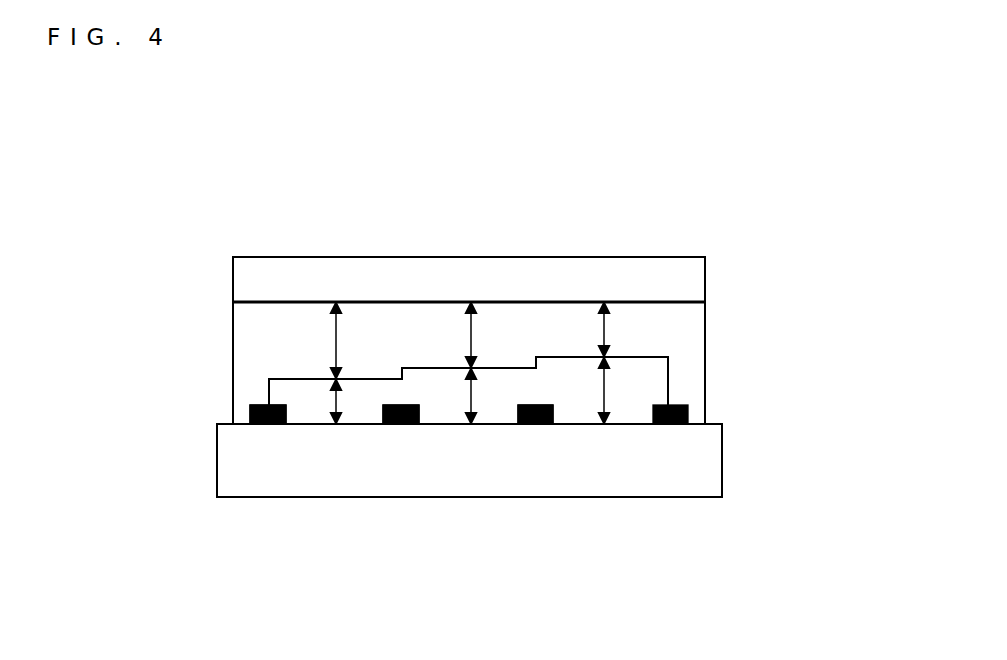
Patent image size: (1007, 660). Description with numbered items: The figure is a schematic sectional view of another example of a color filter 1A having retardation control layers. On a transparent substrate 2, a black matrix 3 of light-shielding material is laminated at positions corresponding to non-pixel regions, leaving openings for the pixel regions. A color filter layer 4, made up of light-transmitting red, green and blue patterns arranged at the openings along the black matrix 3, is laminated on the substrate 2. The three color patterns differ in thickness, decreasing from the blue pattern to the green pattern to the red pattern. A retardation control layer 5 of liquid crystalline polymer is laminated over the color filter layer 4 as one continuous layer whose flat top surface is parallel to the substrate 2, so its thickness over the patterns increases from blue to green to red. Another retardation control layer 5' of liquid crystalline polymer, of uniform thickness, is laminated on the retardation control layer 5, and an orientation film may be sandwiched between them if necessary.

The color filter having retardation control layers 1A is at (163, 295).
The transparent substrate 2 is at (690, 473).
The black matrix 3 is at (688, 413).
The color filter layer 4 is at (684, 372).
The retardation control layer 5 is at (534, 312).
The retardation control layer 5' is at (539, 247).